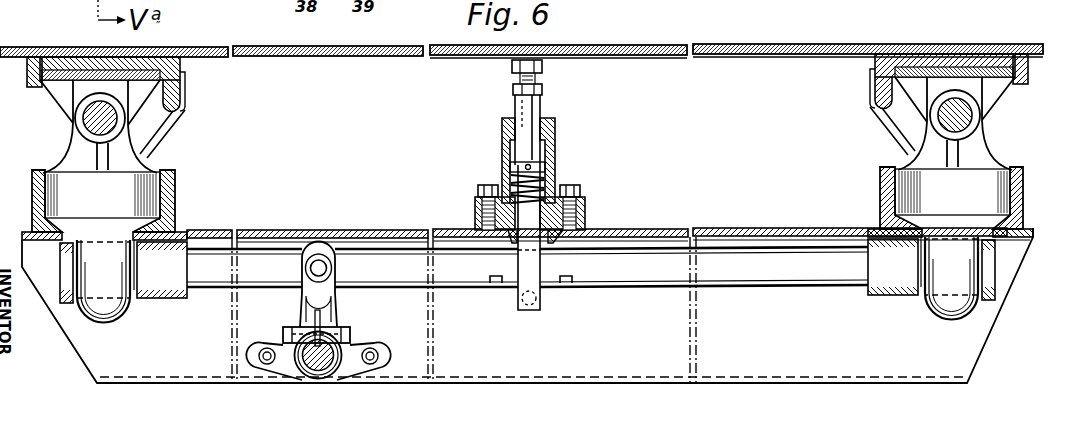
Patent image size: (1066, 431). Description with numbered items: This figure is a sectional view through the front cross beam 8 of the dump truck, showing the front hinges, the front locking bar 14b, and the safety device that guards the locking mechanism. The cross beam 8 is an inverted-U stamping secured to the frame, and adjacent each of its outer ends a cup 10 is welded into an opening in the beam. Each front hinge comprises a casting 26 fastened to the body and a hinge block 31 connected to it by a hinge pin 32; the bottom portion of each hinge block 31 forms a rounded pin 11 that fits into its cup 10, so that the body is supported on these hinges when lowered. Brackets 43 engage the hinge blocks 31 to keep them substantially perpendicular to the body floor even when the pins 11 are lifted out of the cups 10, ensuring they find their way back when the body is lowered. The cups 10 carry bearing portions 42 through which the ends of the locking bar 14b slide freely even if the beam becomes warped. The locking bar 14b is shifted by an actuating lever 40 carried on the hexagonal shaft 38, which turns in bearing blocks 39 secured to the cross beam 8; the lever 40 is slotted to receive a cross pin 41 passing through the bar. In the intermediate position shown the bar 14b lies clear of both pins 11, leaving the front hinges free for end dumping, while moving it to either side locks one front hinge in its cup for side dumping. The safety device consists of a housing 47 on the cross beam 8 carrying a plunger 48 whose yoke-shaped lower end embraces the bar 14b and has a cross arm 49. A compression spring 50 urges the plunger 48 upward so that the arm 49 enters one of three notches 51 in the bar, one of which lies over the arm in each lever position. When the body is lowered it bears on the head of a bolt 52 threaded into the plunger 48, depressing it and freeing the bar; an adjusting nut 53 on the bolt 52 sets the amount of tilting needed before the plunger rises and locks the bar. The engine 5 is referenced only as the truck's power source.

The engine 5 is at (27, 70).
The cross beam 8 is at (349, 230).
The cup 10 is at (176, 193).
The pin 11 is at (90, 310).
The front locking bar 14b is at (390, 262).
The casting 26 is at (67, 95).
The hinge block 31 is at (70, 163).
The hinge pin 32 is at (85, 120).
The hexagonal shaft 38 is at (313, 368).
The bearing block 39 is at (357, 370).
The actuating lever 40 is at (330, 303).
The cross pin 41 is at (316, 270).
The bearing portion 42 is at (172, 298).
The bracket 43 is at (174, 120).
The housing 47 is at (510, 171).
The plunger 48 is at (515, 107).
The cross arm 49 is at (533, 311).
The compression spring 50 is at (546, 171).
The notch 51 is at (525, 283).
The bolt 52 is at (541, 66).
The adjusting nut 53 is at (545, 89).